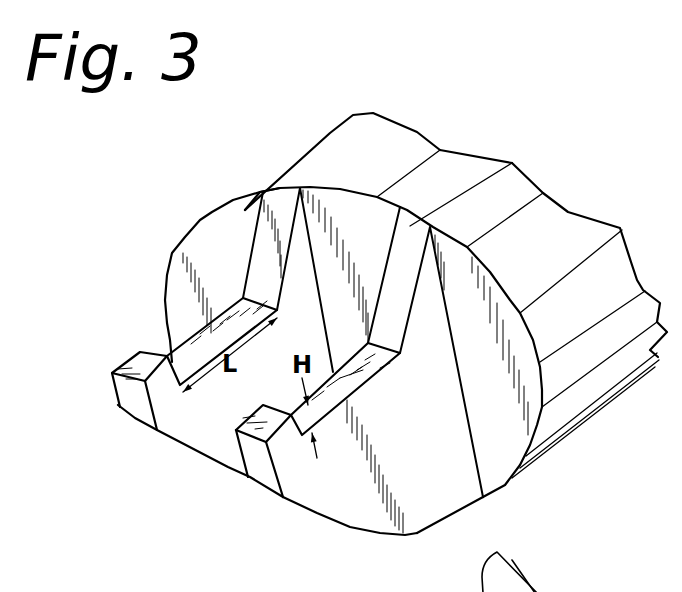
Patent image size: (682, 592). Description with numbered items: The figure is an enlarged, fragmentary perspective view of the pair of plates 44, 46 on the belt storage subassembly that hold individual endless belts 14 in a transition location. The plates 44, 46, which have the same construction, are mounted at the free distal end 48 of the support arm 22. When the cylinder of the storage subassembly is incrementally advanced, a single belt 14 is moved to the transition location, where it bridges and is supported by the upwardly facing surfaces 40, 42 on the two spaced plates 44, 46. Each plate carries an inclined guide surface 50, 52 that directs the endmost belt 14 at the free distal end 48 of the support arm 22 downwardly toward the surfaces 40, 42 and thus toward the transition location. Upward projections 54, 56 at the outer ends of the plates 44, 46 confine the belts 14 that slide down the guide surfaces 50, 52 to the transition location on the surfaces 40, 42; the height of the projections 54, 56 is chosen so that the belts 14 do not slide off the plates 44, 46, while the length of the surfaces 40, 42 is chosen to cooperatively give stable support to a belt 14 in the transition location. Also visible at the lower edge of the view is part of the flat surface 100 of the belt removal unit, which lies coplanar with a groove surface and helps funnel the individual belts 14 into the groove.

The support arm 22 is at (581, 330).
The upwardly facing surface 40 is at (183, 348).
The upwardly facing surface 42 is at (357, 382).
The plate 44 is at (190, 432).
The plate 46 is at (345, 497).
The free distal end 48 is at (211, 235).
The inclined guide surface 50 is at (282, 188).
The inclined guide surface 52 is at (500, 165).
The upward projection 54 is at (138, 366).
The upward projection 56 is at (263, 433).
The flat surface 100 is at (570, 590).
The endless belt 14 is at (597, 576).